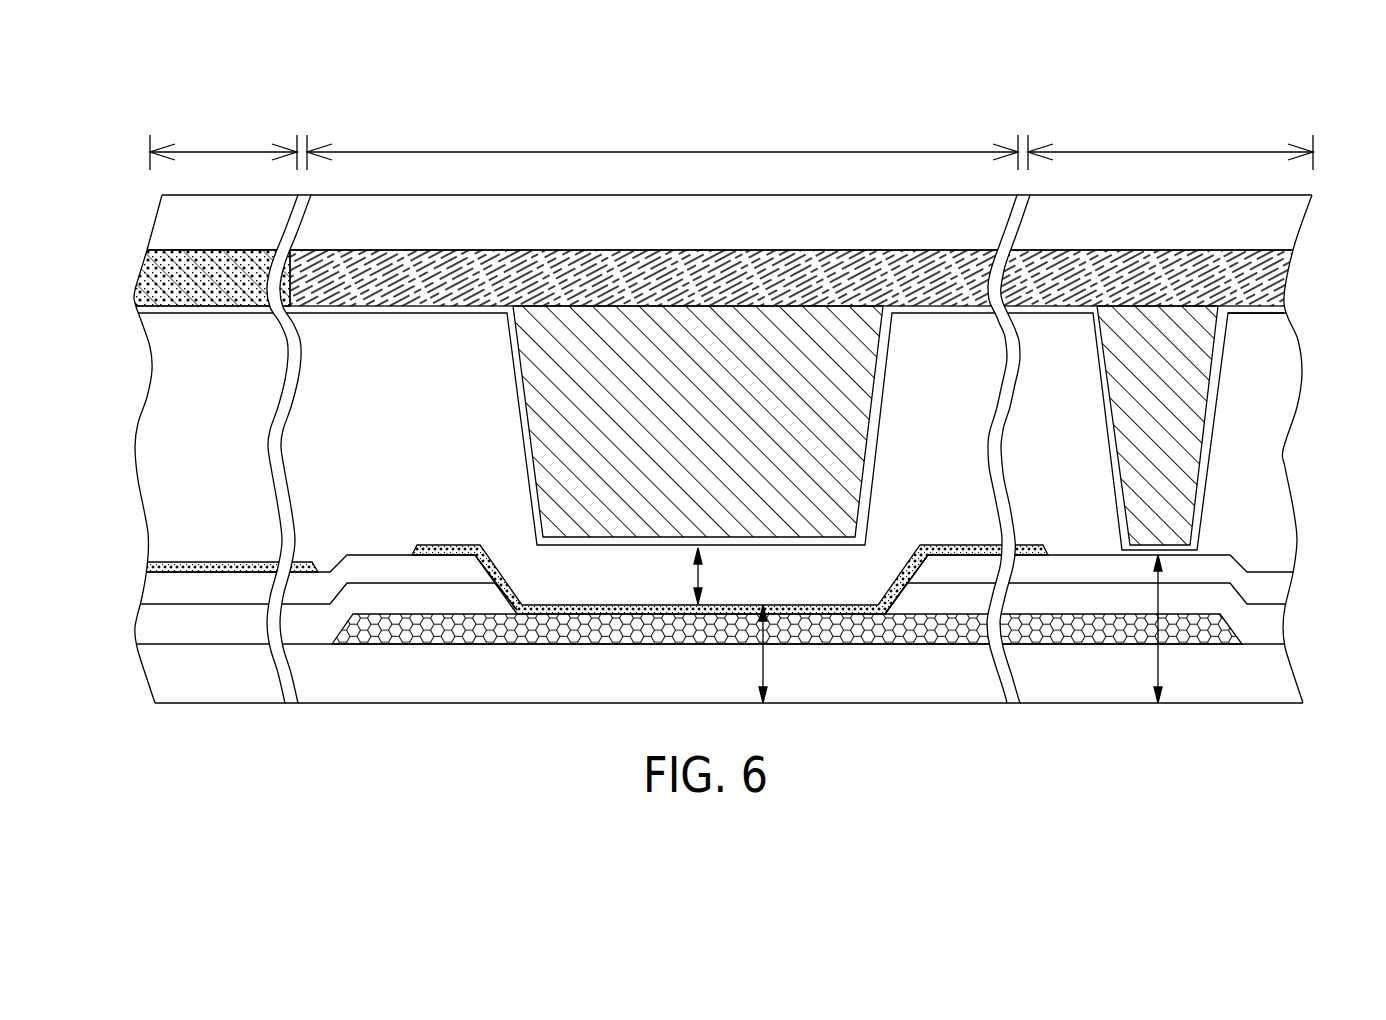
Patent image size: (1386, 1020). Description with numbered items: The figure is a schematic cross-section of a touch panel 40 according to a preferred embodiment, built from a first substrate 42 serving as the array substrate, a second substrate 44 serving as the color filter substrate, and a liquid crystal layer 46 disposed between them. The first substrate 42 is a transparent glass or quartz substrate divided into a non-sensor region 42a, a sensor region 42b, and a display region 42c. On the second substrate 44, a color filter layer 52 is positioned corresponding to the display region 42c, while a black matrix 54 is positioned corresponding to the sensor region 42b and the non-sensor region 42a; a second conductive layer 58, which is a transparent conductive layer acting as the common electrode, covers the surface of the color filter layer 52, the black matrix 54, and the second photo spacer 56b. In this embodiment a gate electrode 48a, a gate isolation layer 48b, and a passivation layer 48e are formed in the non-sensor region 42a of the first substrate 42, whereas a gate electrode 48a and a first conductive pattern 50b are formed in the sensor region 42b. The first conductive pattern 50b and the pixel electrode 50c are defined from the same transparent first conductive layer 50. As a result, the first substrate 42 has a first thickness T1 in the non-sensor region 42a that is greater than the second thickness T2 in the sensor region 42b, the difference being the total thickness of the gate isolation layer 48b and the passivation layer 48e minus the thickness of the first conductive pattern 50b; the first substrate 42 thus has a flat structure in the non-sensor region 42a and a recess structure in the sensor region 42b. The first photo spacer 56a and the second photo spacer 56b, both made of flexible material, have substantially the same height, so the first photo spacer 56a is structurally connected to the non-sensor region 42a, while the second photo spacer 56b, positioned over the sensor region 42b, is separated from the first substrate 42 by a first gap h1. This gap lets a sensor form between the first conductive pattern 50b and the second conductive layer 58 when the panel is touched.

The touch panel 40 is at (1252, 74).
The first substrate 42 is at (165, 690).
The non-sensor region 42a is at (1170, 140).
The sensor region 42b is at (662, 140).
The display region 42c is at (223, 140).
The second substrate 44 is at (180, 236).
The liquid crystal layer 46 is at (1258, 466).
The gate electrode 48a is at (822, 640).
The gate isolation layer 48b is at (215, 617).
The passivation layer 48e is at (265, 588).
The first conductive layer 50 is at (589, 520).
The first conductive pattern 50b is at (722, 545).
The pixel electrode 50c is at (297, 560).
The color filter layer 52 is at (175, 289).
The black matrix 54 is at (671, 289).
The first photo spacer 56a is at (1139, 411).
The second photo spacer 56b is at (667, 411).
The second conductive layer 58 is at (1260, 315).
The first gap h1 is at (718, 576).
The first thickness T1 is at (1178, 629).
The second thickness T2 is at (746, 654).